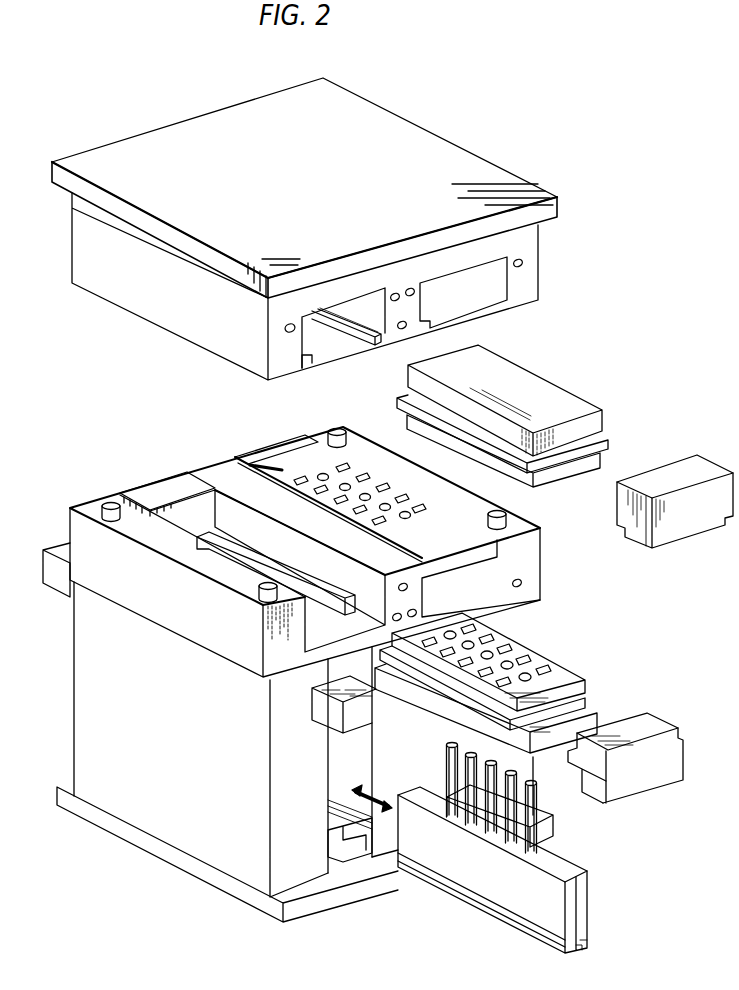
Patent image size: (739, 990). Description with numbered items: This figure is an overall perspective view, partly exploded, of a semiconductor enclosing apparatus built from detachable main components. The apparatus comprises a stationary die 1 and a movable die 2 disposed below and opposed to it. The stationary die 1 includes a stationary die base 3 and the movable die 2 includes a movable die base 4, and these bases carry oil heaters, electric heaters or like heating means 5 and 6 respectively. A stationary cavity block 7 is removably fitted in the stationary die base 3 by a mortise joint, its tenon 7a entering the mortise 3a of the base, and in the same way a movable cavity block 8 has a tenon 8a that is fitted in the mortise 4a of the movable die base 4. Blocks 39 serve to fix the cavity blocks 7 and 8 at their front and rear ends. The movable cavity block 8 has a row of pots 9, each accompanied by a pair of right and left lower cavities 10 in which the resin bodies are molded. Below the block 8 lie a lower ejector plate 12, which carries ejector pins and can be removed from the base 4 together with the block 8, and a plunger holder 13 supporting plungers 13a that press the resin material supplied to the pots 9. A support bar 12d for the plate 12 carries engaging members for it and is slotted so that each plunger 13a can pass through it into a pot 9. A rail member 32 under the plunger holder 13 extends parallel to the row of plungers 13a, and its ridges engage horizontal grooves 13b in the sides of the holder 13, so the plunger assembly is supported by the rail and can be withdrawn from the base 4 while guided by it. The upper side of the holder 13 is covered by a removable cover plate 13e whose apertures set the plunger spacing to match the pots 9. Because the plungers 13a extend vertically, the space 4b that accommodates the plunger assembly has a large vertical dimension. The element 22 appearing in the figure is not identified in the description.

The stationary die 1 is at (300, 229).
The movable die 2 is at (296, 680).
The stationary die base 3 is at (153, 307).
The mortise 3a is at (367, 327).
The movable die base 4 is at (158, 810).
The mortise 4a is at (327, 563).
The space 4b is at (346, 755).
The heating means 5 is at (524, 263).
The heating means 6 is at (523, 583).
The stationary cavity block 7 is at (552, 472).
The tenon 7a is at (604, 447).
The movable cavity block 8 is at (426, 587).
The tenon 8a is at (590, 690).
The pots 9 is at (322, 478).
The lower cavities 10 is at (329, 489).
The lower ejector plate 12 is at (585, 710).
The support bar 12d is at (375, 690).
The plunger holder 13 is at (510, 848).
The plungers 13a is at (470, 772).
The horizontal grooves 13b is at (453, 890).
The cover plate 13e is at (560, 864).
The punch block 22 is at (528, 383).
The rail member 32 is at (347, 852).
The blocks 39 is at (475, 303).